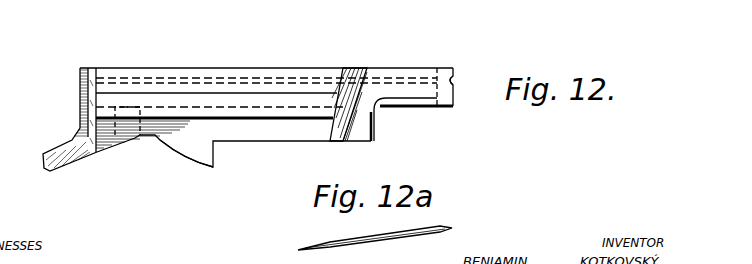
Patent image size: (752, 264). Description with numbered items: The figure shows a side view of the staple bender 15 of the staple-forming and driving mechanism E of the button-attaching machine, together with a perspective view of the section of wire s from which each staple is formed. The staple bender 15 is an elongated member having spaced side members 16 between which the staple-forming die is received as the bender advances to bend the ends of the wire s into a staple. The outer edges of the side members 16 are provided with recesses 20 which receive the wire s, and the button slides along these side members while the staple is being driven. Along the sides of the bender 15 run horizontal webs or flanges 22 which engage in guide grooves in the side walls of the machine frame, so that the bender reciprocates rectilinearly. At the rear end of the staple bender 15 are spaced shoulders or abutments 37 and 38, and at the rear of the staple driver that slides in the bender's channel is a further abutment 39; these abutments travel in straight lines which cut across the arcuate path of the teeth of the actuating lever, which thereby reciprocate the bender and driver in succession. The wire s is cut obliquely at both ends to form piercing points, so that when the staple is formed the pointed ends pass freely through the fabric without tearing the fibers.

In FIG. 12, the staple bender 15 is at (460, 58).
In FIG. 12, the side member 16 is at (405, 70).
In FIG. 12, the recess 20 is at (455, 80).
In FIG. 12, the horizontal web or flange 22 is at (243, 99).
In FIG. 12, the shoulder or abutment 37 is at (161, 141).
In FIG. 12, the shoulder or abutment 38 is at (136, 137).
In FIG. 12, the abutment 39 is at (117, 143).
In FIG. 12, the staple-forming and driving mechanism E is at (422, 134).
In FIG. 12A, the wire section S is at (383, 233).